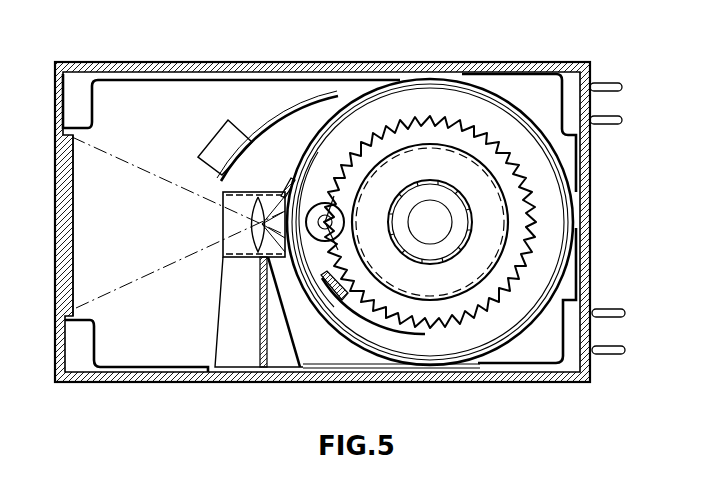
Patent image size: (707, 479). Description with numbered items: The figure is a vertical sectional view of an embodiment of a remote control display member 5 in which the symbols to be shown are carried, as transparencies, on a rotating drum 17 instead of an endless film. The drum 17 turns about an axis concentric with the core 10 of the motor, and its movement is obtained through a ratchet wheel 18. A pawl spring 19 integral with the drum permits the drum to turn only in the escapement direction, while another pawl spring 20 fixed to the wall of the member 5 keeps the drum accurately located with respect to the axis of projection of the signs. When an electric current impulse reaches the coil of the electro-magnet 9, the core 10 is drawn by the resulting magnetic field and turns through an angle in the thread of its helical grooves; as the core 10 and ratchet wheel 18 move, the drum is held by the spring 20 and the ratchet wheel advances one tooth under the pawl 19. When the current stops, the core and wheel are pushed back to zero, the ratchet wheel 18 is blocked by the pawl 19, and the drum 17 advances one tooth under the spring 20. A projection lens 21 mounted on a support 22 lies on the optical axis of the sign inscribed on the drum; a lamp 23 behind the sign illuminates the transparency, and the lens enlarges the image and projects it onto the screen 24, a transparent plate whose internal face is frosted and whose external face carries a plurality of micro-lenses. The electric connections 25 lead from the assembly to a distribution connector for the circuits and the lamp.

The remote control display member 5 is at (280, 62).
The electric connections 25 is at (609, 83).
The screen 24 is at (62, 277).
The pawl spring 20 is at (279, 123).
The drum 17 is at (572, 210).
The pawl spring 19 is at (387, 333).
The ratchet wheel 18 is at (482, 145).
The electro-magnet 9 is at (497, 242).
The core 10 is at (453, 233).
The lamp 23 is at (311, 246).
The projection lens 21 is at (227, 258).
The support 22 is at (228, 308).